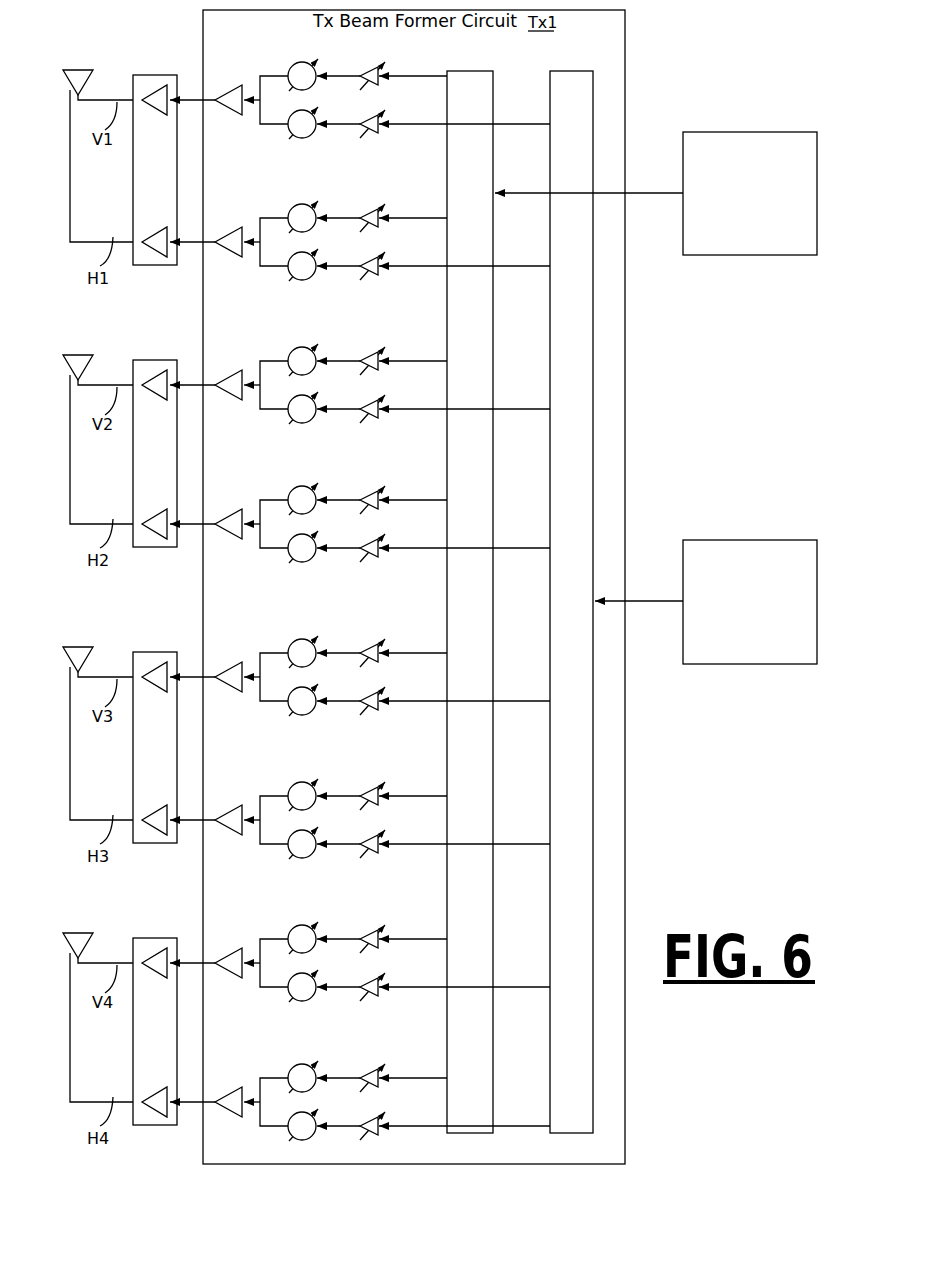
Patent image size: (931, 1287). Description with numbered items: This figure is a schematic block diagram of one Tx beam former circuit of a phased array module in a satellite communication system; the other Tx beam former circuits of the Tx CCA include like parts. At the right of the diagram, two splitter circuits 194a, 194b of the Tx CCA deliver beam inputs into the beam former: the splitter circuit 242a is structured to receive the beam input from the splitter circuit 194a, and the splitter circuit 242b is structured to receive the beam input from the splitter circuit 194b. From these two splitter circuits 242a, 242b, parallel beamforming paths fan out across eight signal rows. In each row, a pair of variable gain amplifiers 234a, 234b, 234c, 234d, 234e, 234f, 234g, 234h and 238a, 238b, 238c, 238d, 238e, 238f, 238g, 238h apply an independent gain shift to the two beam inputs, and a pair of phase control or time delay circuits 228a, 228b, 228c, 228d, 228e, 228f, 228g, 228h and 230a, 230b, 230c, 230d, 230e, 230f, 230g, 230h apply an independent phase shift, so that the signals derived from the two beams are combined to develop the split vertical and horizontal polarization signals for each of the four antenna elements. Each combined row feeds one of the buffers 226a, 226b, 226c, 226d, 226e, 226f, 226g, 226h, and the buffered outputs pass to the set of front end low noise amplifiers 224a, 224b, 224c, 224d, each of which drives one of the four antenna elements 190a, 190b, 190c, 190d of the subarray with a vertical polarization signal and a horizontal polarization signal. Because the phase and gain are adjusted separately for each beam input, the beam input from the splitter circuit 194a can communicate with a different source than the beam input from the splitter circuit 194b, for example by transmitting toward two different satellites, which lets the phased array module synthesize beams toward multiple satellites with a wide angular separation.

The antenna element 190a is at (77, 68).
The antenna element 190b is at (77, 353).
The antenna element 190c is at (77, 645).
The antenna element 190d is at (77, 931).
The splitter circuit 194a is at (705, 132).
The splitter circuit 194b is at (725, 540).
The front end low noise amplifier 224a is at (157, 75).
The front end low noise amplifier 224b is at (157, 360).
The front end low noise amplifier 224c is at (157, 652).
The front end low noise amplifier 224d is at (157, 938).
The buffer 226a is at (238, 87).
The buffer 226b is at (238, 229).
The buffer 226c is at (238, 372).
The buffer 226d is at (238, 511).
The buffer 226e is at (238, 664).
The buffer 226f is at (238, 807).
The buffer 226g is at (238, 950).
The buffer 226h is at (238, 1089).
The phase control or time delay circuit 228a is at (307, 62).
The phase control or time delay circuit 228b is at (307, 204).
The phase control or time delay circuit 228c is at (307, 347).
The phase control or time delay circuit 228d is at (307, 486).
The phase control or time delay circuit 228e is at (307, 639).
The phase control or time delay circuit 228f is at (307, 782).
The phase control or time delay circuit 228g is at (307, 925).
The phase control or time delay circuit 228h is at (307, 1064).
The phase control or time delay circuit 230a is at (298, 138).
The phase control or time delay circuit 230b is at (298, 280).
The phase control or time delay circuit 230c is at (298, 423).
The phase control or time delay circuit 230d is at (298, 562).
The phase control or time delay circuit 230e is at (298, 715).
The phase control or time delay circuit 230f is at (298, 858).
The phase control or time delay circuit 230g is at (298, 1001).
The phase control or time delay circuit 230h is at (298, 1140).
The variable gain amplifier 234a is at (376, 67).
The variable gain amplifier 234b is at (376, 209).
The variable gain amplifier 234c is at (376, 352).
The variable gain amplifier 234d is at (376, 491).
The variable gain amplifier 234e is at (376, 644).
The variable gain amplifier 234f is at (376, 787).
The variable gain amplifier 234g is at (376, 930).
The variable gain amplifier 234h is at (376, 1069).
The variable gain amplifier 238a is at (372, 136).
The variable gain amplifier 238b is at (372, 278).
The variable gain amplifier 238c is at (372, 421).
The variable gain amplifier 238d is at (372, 560).
The variable gain amplifier 238e is at (372, 713).
The variable gain amplifier 238f is at (372, 856).
The variable gain amplifier 238g is at (372, 999).
The variable gain amplifier 238h is at (372, 1138).
The splitter circuit 242a is at (475, 70).
The splitter circuit 242b is at (581, 70).